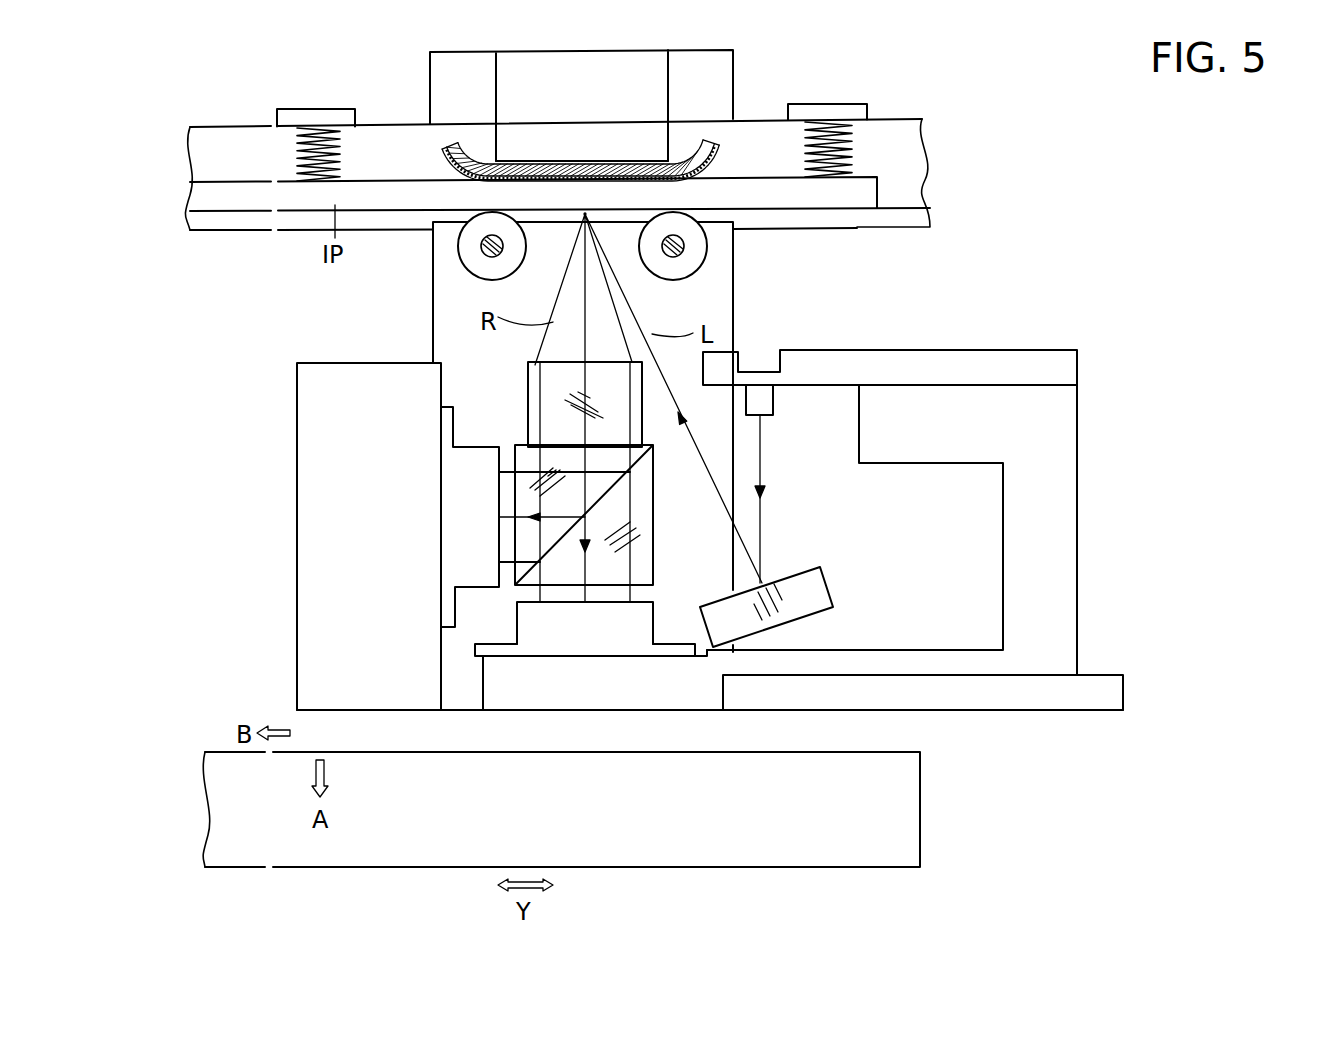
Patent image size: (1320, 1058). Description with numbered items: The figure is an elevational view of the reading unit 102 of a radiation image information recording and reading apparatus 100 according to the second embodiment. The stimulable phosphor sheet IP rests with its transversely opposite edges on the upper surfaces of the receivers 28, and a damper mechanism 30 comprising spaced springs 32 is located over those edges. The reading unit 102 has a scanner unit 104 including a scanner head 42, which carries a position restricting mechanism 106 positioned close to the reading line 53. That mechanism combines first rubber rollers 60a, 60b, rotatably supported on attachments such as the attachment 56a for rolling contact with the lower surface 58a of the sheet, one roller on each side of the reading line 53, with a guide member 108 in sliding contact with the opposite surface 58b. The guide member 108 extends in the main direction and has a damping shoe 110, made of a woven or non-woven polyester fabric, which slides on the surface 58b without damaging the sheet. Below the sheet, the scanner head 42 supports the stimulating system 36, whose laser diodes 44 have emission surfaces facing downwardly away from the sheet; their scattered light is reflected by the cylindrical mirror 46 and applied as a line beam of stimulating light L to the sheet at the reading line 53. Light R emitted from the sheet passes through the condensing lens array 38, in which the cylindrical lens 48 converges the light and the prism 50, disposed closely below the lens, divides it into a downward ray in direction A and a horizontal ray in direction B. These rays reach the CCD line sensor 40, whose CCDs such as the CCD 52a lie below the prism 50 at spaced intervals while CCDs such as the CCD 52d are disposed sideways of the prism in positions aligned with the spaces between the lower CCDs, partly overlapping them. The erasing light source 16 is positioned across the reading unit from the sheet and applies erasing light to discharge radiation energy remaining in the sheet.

The erasing light source 16 is at (938, 790).
The receiver 28 is at (905, 216).
The damper mechanism 30 is at (913, 106).
The spring 32 is at (838, 128).
The stimulating system 36 is at (780, 317).
The condensing lens array 38 is at (662, 602).
The CCD line sensor 40 is at (510, 600).
The scanner head 42 is at (1055, 444).
The laser diode 44 is at (766, 400).
The cylindrical mirror 46 is at (817, 590).
The cylindrical lens 48 is at (536, 402).
The prism 50 is at (567, 575).
The CCD 52a is at (650, 645).
The CCD 52d is at (463, 527).
The reading line 53 is at (590, 218).
The attachment 56a is at (445, 312).
The lower surface 58a is at (862, 227).
The surface 58b is at (760, 176).
The first rubber roller 60a is at (702, 246).
The first rubber roller 60b is at (470, 249).
The radiation image information recording and reading apparatus 100 is at (1100, 154).
The reading unit 102 is at (1137, 292).
The scanner unit 104 is at (973, 312).
The position restricting mechanism 106 is at (474, 88).
The guide member 108 is at (560, 150).
The damping shoe 110 is at (447, 143).